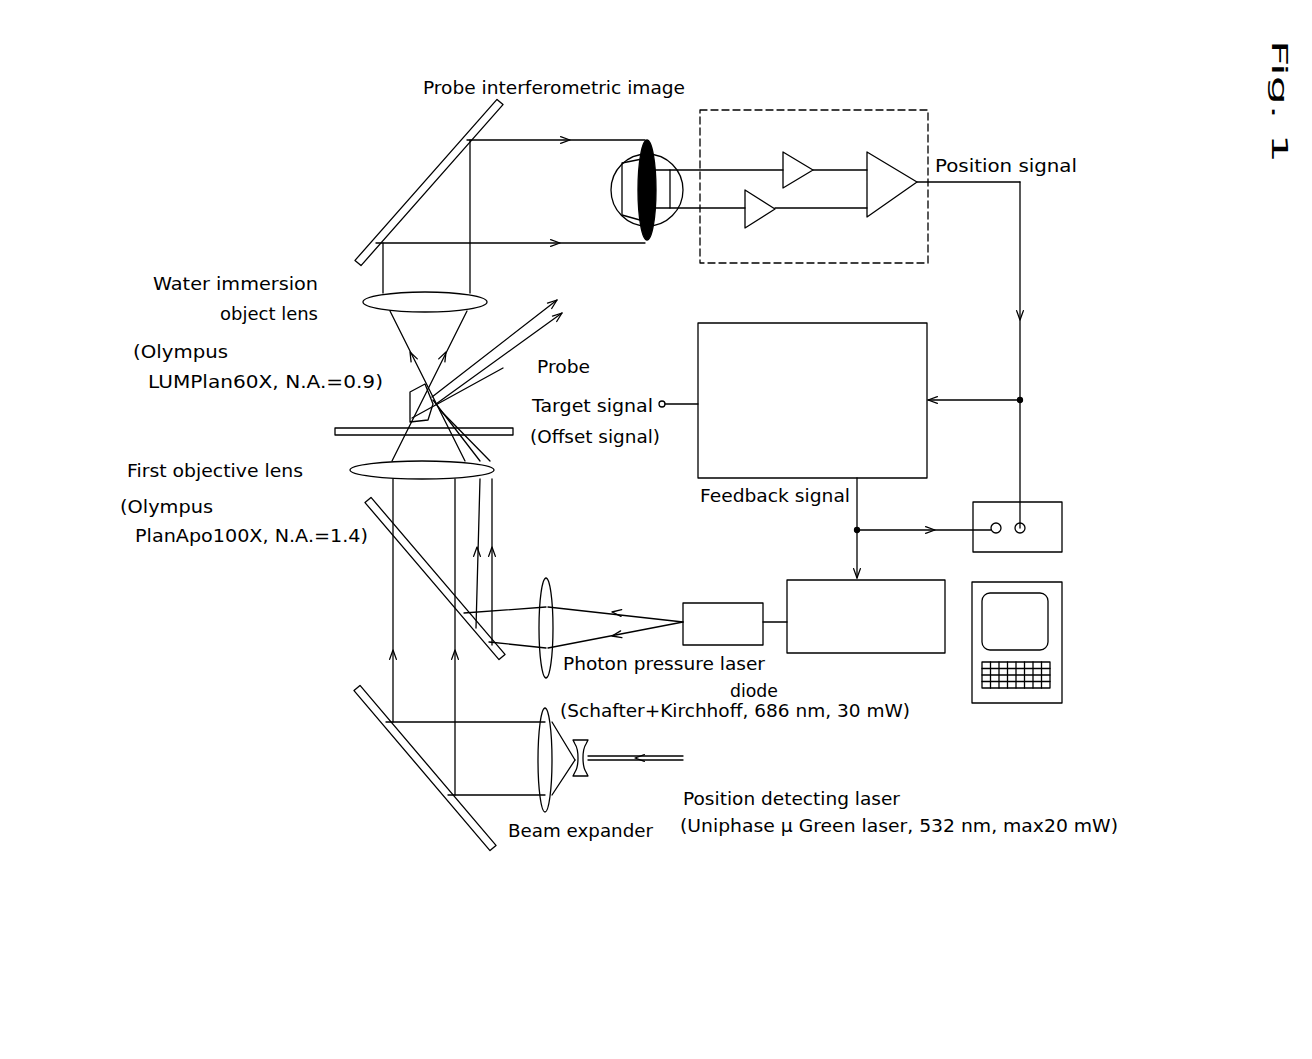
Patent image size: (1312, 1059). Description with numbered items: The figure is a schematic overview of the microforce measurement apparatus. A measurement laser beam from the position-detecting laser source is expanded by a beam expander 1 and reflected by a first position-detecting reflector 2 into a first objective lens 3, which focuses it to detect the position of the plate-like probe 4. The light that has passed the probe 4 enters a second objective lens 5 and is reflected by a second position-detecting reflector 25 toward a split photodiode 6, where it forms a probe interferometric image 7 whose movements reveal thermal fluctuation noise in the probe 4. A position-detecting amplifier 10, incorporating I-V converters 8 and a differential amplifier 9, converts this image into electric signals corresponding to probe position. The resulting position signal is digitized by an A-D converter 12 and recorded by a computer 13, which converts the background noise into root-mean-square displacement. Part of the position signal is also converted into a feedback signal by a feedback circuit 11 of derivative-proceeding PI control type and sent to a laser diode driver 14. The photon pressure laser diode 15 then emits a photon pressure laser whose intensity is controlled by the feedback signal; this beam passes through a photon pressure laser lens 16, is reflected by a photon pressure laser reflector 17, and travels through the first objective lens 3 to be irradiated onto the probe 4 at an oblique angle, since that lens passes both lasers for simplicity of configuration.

The beam expander 1 is at (550, 797).
The first position-detecting reflector 2 is at (460, 826).
The first objective lens 3 is at (492, 474).
The probe 4 is at (519, 388).
The second objective lens 5 is at (372, 304).
The split photodiode 6 is at (587, 226).
The interferometric image 7 is at (665, 173).
The I-V converter 8 is at (791, 192).
The differential amplifier 9 is at (909, 209).
The position-detecting amplifier 10 is at (811, 214).
The feedback circuit 11 is at (812, 400).
The A-D converter 12 is at (971, 516).
The computer 13 is at (1061, 669).
The laser diode driver 14 is at (866, 616).
The photon pressure laser diode 15 is at (753, 643).
The photon pressure laser lens 16 is at (546, 668).
The photon pressure laser reflector 17 is at (487, 656).
The second position-detecting reflector 25 is at (432, 176).